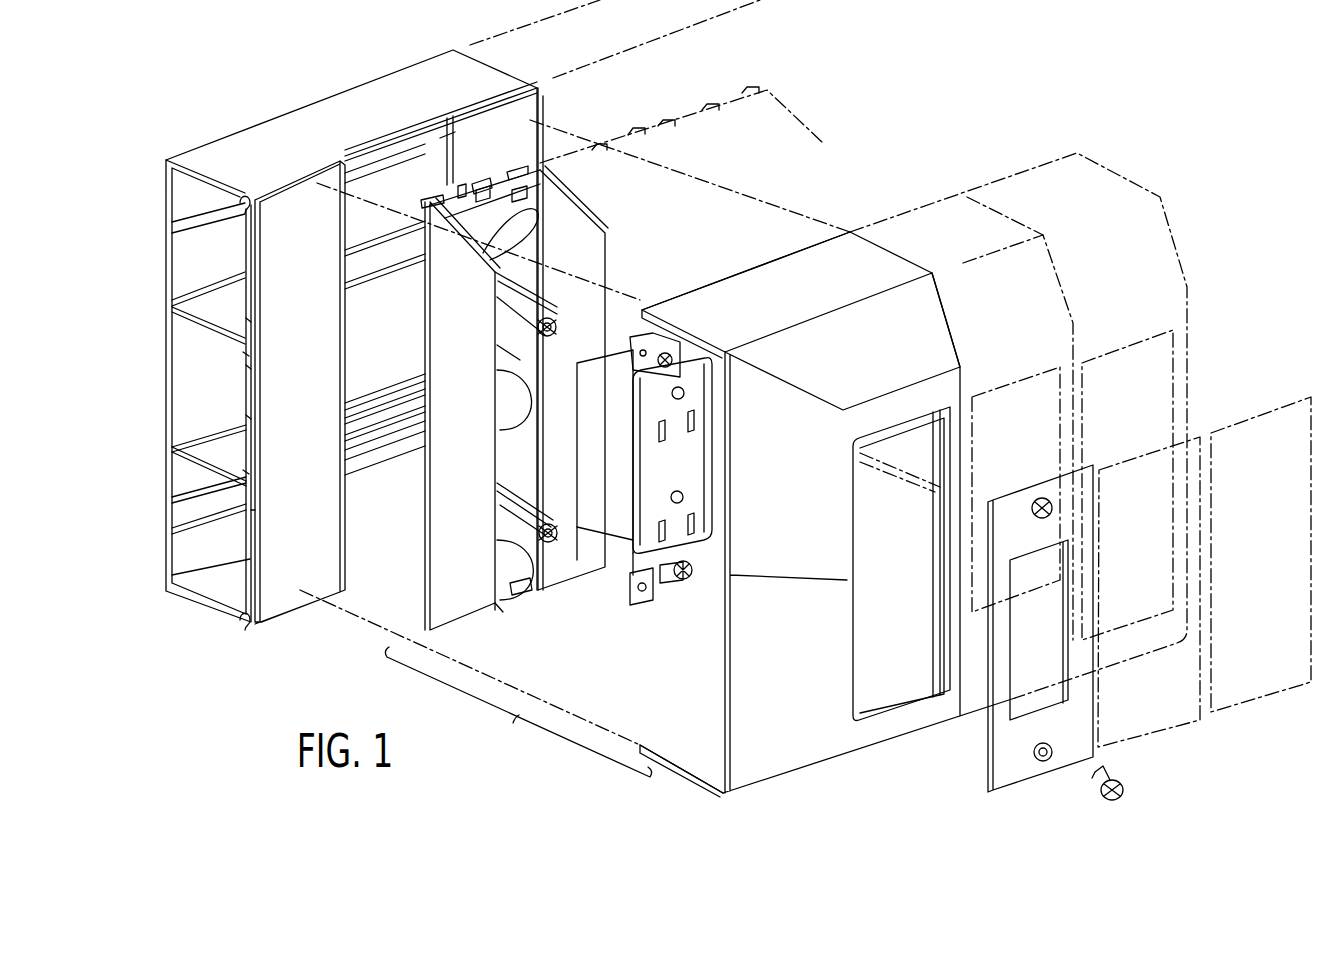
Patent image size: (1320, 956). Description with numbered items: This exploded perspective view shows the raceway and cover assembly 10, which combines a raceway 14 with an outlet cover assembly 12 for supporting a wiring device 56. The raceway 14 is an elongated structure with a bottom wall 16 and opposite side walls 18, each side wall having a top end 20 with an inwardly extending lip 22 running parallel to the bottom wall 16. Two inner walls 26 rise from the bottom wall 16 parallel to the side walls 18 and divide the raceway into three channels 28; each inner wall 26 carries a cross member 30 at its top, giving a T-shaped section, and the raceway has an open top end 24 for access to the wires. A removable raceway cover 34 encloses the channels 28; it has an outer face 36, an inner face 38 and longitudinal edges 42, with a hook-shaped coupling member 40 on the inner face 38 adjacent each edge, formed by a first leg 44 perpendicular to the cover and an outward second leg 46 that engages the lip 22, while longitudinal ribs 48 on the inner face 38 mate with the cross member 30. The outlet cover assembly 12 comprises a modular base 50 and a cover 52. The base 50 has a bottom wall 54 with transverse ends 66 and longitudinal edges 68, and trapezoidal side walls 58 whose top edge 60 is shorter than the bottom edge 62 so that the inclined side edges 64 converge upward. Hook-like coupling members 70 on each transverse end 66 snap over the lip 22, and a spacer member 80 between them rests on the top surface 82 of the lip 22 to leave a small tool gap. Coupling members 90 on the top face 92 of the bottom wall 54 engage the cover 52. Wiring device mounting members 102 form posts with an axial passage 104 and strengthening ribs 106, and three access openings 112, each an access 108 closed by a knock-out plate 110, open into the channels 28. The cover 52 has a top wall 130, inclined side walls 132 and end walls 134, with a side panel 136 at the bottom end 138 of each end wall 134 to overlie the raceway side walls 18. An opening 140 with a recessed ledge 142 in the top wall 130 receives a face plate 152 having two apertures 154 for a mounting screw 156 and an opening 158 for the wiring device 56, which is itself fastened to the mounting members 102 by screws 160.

The raceway and cover assembly 10 is at (922, 48).
The outlet cover assembly 12 is at (518, 712).
The raceway 14 is at (332, 88).
The bottom wall 16 is at (175, 366).
The side walls 18 is at (213, 170).
The top end 20 is at (244, 195).
The lip 22 is at (252, 206).
The open top end 24 is at (447, 180).
The inner wall 26 is at (182, 310).
The channels 28 is at (183, 270).
The cross member 30 is at (244, 354).
The raceway cover 34 is at (286, 265).
The outer face 36 is at (254, 526).
The inner face 38 is at (248, 516).
The coupling member 40 is at (184, 240).
The longitudinal edges 42 is at (320, 178).
The first leg 44 is at (240, 230).
The second leg 46 is at (237, 202).
The longitudinal ribs 48 is at (248, 324).
The modular base 50 is at (607, 233).
The cover 52 is at (850, 233).
The bottom wall 54 is at (530, 255).
The wiring device 56 is at (630, 570).
The side walls 58 is at (440, 335).
The top edge 60 is at (610, 244).
The bottom edge 62 is at (425, 457).
The inclined side edges 64 is at (565, 190).
The transverse ends 66 is at (462, 187).
The longitudinal edges 68 is at (547, 362).
The coupling member 70 is at (512, 162).
The spacer member 80 is at (478, 178).
The top surface 82 is at (398, 142).
The coupling members 90 is at (495, 217).
The top face 92 is at (533, 434).
The wiring device mounting members 102 is at (497, 307).
The axial passage 104 is at (570, 314).
The strengthening ribs 106 is at (553, 524).
The access 108 is at (510, 357).
The knock-out plate 110 is at (497, 400).
The access openings 112 is at (526, 416).
The top wall 130 is at (858, 744).
The side walls 132 is at (797, 762).
The end walls 134 is at (937, 335).
The side panel 136 is at (887, 267).
The bottom end 138 is at (860, 304).
The opening 140 is at (875, 627).
The recessed ledge 142 is at (930, 704).
The face plate 152 is at (1026, 792).
The apertures 154 is at (1050, 750).
The mounting screw 156 is at (1040, 502).
The opening 158 is at (1050, 598).
The screws 160 is at (683, 580).